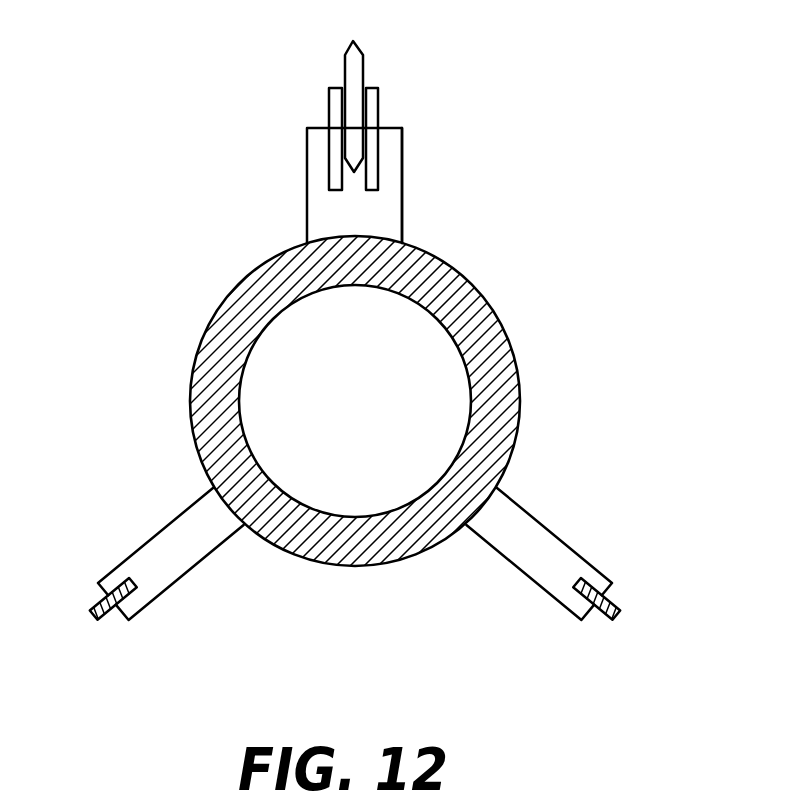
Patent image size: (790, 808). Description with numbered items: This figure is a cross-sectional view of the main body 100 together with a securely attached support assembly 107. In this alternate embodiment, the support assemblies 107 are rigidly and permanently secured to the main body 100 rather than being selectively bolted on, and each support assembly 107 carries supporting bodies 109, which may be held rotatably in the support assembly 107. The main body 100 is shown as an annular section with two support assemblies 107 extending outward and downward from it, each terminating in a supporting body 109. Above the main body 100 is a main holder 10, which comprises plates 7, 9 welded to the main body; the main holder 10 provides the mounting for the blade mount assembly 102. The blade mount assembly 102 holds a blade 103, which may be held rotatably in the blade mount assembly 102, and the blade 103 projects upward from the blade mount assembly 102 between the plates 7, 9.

The plate 7 is at (392, 212).
The plate 9 is at (313, 212).
The main holder 10 is at (402, 127).
The main body 100 is at (515, 423).
The blade mount assembly 102 is at (373, 104).
The blade 103 is at (360, 61).
The support assembly 107 is at (173, 531).
The supporting body 109 is at (95, 605).